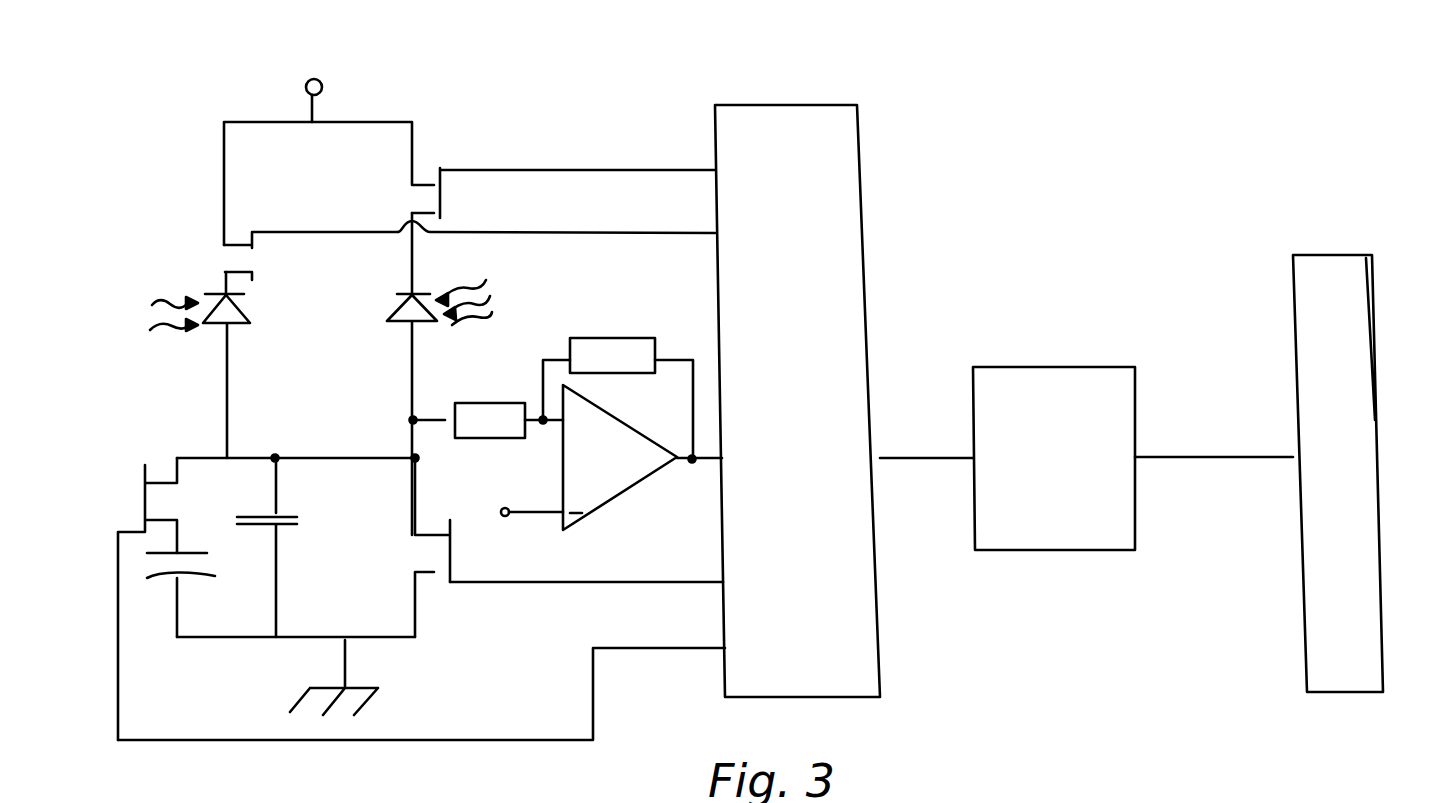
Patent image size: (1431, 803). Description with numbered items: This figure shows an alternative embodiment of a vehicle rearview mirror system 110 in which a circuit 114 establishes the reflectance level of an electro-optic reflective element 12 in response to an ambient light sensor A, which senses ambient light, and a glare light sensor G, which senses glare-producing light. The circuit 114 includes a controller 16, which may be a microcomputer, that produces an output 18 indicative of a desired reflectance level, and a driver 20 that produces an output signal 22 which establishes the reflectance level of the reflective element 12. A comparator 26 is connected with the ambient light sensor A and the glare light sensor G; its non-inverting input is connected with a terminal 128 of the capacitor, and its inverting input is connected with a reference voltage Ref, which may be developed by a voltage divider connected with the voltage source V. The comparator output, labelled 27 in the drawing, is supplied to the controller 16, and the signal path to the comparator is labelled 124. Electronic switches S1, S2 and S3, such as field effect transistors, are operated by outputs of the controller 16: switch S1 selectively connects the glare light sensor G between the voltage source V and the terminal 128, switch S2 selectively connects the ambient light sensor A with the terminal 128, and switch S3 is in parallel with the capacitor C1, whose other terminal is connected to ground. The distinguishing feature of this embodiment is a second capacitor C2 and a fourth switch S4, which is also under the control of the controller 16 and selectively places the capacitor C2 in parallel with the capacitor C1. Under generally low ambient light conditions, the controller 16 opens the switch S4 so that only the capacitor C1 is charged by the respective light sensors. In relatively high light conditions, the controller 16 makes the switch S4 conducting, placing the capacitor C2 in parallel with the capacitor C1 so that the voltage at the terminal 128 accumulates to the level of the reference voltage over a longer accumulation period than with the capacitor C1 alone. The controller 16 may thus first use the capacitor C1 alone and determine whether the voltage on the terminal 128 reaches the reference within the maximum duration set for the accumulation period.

The electro-optic reflective element 12 is at (1332, 251).
The controller 16 is at (772, 104).
The output 18 is at (892, 457).
The driver 20 is at (1030, 367).
The output signal 22 is at (1180, 450).
The comparator 26 is at (618, 493).
The reference input of comparator 27 is at (538, 512).
The vehicle rearview mirror system 110 is at (1053, 281).
The circuit 114 is at (668, 292).
The signal line to comparator 124 is at (415, 491).
The terminal 128 is at (307, 457).
The switch S1 is at (233, 244).
The switch S2 is at (426, 177).
The switch S3 is at (434, 572).
The fourth switch S4 is at (158, 483).
The capacitor C1 is at (316, 517).
The second capacitor C2 is at (200, 546).
The glare light sensor G is at (262, 299).
The ambient light sensor A is at (392, 318).
The voltage source V is at (311, 83).
The reference voltage input Ref is at (528, 500).